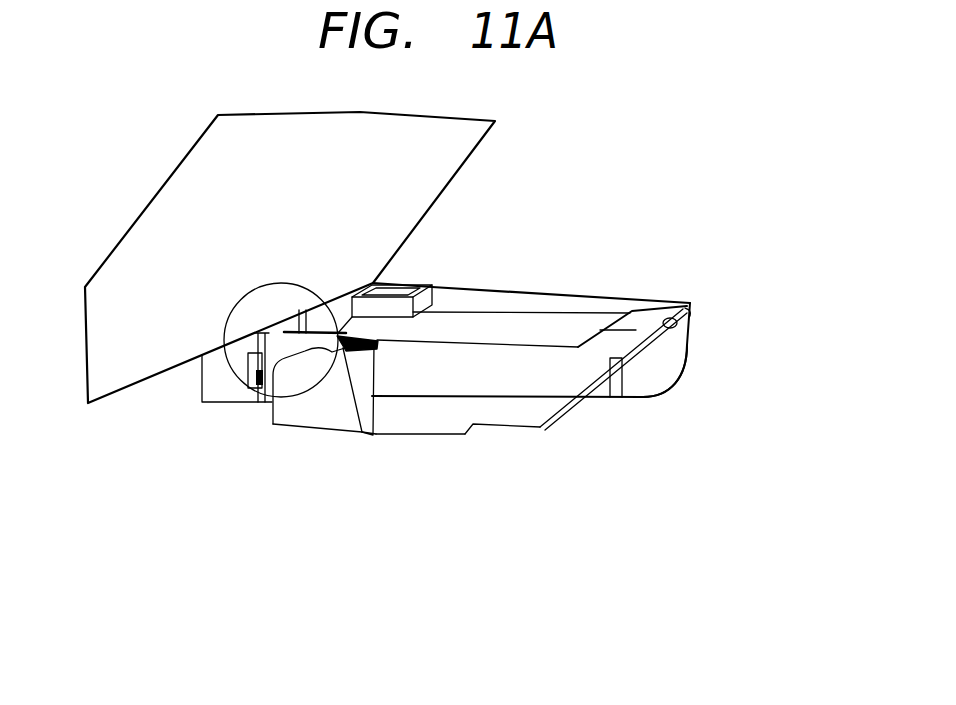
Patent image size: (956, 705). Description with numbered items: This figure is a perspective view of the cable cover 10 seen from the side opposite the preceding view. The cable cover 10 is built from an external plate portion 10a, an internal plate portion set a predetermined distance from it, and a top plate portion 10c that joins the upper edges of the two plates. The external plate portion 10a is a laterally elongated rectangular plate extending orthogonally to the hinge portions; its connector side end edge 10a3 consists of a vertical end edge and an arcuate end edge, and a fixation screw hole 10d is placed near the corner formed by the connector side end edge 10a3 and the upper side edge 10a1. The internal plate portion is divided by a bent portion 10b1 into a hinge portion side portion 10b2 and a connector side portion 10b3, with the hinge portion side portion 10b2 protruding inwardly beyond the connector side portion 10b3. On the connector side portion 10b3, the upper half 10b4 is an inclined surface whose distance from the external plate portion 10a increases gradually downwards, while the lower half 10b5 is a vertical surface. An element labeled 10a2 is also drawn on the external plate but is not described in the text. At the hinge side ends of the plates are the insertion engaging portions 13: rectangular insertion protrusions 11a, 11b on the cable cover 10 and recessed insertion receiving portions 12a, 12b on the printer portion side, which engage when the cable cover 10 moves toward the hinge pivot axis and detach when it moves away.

The cable cover 10 is at (524, 291).
The external plate portion 10a is at (600, 297).
The upper side edge 10a1 is at (570, 297).
The post 10a2 is at (605, 398).
The connector side end edge 10a3 is at (688, 364).
The bent portion 10b1 is at (378, 414).
The hinge portion side portion 10b2 is at (322, 410).
The connector side portion 10b3 is at (474, 400).
The upper half 10b4 is at (497, 394).
The lower half 10b5 is at (420, 417).
The top plate portion 10c is at (450, 327).
The fixation screw hole 10d is at (695, 315).
The insertion protrusion 11a is at (261, 372).
The insertion protrusion 11b is at (331, 288).
The insertion receiving portion 12a is at (274, 392).
The insertion receiving portion 12b is at (330, 290).
The insertion engaging portions 13 is at (238, 379).